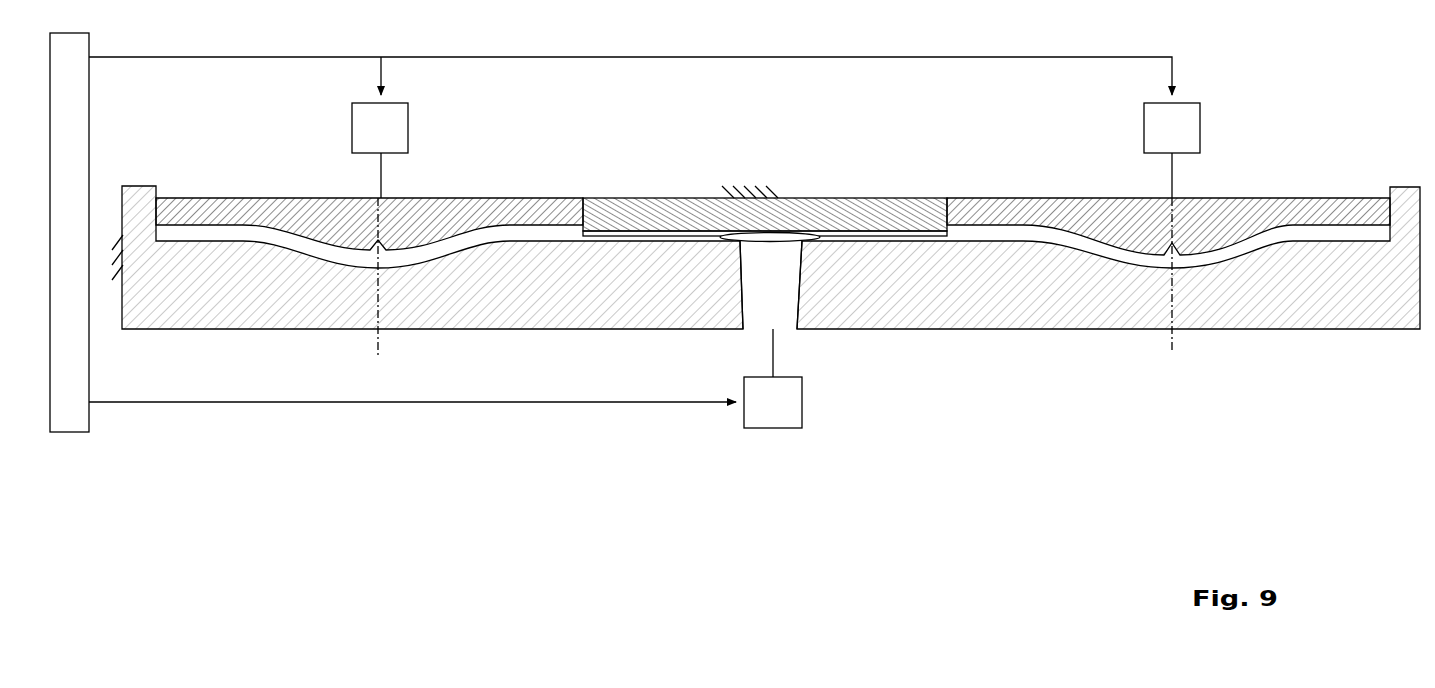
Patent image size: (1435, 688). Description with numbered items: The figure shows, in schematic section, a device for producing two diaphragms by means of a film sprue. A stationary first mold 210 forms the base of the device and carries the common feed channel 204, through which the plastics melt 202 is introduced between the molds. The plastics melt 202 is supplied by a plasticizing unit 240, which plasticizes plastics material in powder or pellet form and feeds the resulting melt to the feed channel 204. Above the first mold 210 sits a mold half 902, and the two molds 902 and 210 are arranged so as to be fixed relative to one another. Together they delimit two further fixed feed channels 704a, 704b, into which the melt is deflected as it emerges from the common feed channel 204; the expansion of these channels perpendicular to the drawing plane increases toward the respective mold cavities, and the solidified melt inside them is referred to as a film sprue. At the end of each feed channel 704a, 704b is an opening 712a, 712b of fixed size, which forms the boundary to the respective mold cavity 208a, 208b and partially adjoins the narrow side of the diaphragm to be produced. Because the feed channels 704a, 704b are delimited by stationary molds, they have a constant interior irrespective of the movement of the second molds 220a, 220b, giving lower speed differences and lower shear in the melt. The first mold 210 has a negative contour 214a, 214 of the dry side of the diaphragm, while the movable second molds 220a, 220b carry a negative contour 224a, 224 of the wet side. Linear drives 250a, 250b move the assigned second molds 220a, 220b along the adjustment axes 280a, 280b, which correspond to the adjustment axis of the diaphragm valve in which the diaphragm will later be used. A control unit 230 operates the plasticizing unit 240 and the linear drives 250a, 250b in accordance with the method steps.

The plastics melt 202 is at (775, 302).
The feed channel 204 is at (780, 313).
The mold cavity 208a is at (266, 241).
The mold cavity 208b is at (1062, 242).
The first mold 210 is at (528, 303).
The negative contour 214a is at (185, 229).
The negative contour 214 is at (982, 231).
The second mold 220a is at (532, 213).
The second mold 220b is at (1350, 205).
The negative contour 224a is at (208, 236).
The negative contour 224 is at (1003, 237).
The control unit 230 is at (87, 247).
The plasticizing unit 240 is at (794, 415).
The linear drive 250a is at (405, 139).
The linear drive 250b is at (1197, 139).
The adjustment axis 280a is at (390, 252).
The adjustment axis 280b is at (1196, 244).
The feed channel 704a is at (665, 237).
The feed channel 704b is at (870, 237).
The opening 712a is at (590, 224).
The opening 712b is at (939, 226).
The mold half 902 is at (810, 217).